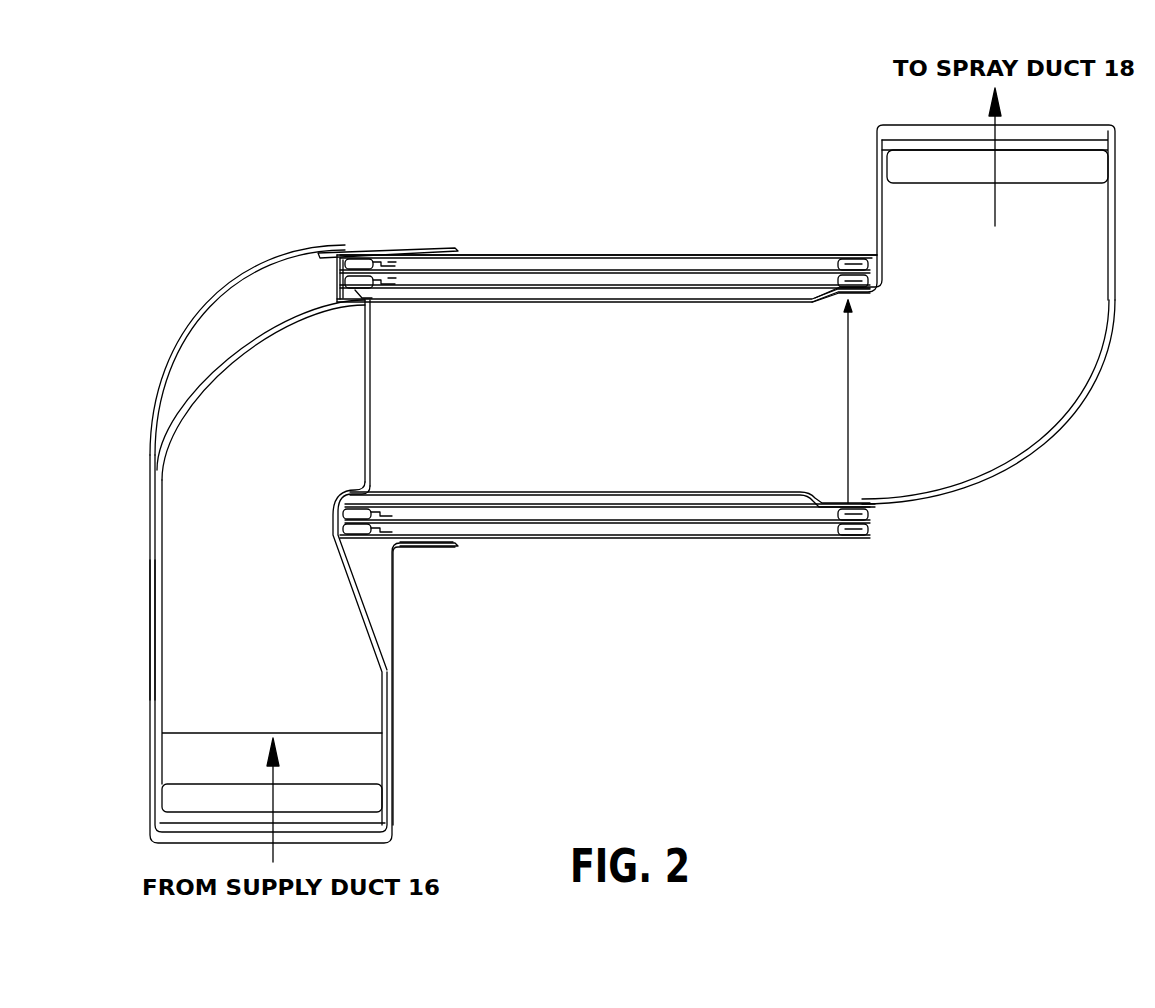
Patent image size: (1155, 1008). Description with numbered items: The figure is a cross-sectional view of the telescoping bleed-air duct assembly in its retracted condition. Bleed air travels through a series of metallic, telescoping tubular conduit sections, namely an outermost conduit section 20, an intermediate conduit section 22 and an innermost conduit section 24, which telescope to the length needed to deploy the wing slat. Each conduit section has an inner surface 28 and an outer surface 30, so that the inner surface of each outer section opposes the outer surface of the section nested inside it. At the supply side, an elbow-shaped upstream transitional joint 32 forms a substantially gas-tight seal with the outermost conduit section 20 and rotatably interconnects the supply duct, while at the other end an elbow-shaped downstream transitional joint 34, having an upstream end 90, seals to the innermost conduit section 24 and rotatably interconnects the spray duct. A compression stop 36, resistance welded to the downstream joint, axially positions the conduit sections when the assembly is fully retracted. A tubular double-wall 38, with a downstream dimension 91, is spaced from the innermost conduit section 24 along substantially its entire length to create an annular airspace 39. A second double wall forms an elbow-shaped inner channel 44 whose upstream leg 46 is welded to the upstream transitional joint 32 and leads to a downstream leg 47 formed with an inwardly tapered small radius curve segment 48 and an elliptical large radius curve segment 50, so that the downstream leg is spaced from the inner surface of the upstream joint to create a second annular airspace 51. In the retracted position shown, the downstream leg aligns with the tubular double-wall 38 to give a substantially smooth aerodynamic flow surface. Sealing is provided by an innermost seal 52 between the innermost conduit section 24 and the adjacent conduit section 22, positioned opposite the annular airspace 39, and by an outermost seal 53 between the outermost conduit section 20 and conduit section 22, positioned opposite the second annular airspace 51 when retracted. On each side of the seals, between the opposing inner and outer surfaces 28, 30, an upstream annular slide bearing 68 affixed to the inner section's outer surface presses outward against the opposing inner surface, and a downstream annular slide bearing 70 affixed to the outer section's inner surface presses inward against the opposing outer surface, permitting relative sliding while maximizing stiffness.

The outermost conduit section 20 is at (597, 383).
The conduit section 22 is at (663, 268).
The innermost conduit section 24 is at (750, 290).
The inner surface 28 is at (500, 290).
The outer surface 30 is at (515, 256).
The upstream transitional joint 32 is at (148, 437).
The downstream transitional joint 34 is at (1018, 440).
The compression stop 36 is at (858, 250).
The tubular double-wall 38 is at (632, 484).
The annular airspace 39 is at (500, 498).
The inner channel 44 is at (262, 308).
The upstream leg 46 is at (157, 632).
The downstream leg 47 is at (298, 314).
The small radius curve segment 48 is at (335, 520).
The large radius curve segment 50 is at (218, 372).
The second annular airspace 51 is at (380, 600).
The innermost seal 52 is at (387, 303).
The outermost seal 53 is at (395, 250).
The upstream annular slide bearing 68 is at (357, 264).
The downstream annular slide bearing 70 is at (826, 262).
The upstream end 90 is at (860, 500).
The downstream dimension 91 is at (852, 310).